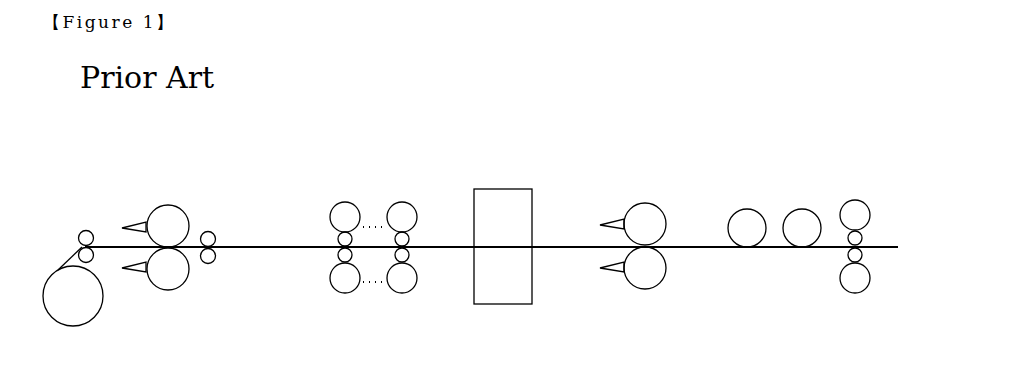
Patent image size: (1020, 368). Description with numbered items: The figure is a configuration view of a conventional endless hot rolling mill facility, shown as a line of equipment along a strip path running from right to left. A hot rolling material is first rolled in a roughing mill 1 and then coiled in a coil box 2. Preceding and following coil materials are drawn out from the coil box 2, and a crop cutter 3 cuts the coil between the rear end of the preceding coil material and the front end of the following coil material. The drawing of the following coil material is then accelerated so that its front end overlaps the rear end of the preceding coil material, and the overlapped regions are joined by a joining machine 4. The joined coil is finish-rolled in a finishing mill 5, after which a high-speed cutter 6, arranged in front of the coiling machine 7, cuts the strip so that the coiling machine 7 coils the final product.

The roughing mill 1 is at (873, 189).
The coil box 2 is at (822, 189).
The crop cutter 3 is at (672, 188).
The joining machine 4 is at (503, 189).
The finishing mill 5 is at (415, 187).
The high-speed cutter 6 is at (197, 187).
The coiling machine 7 is at (100, 210).